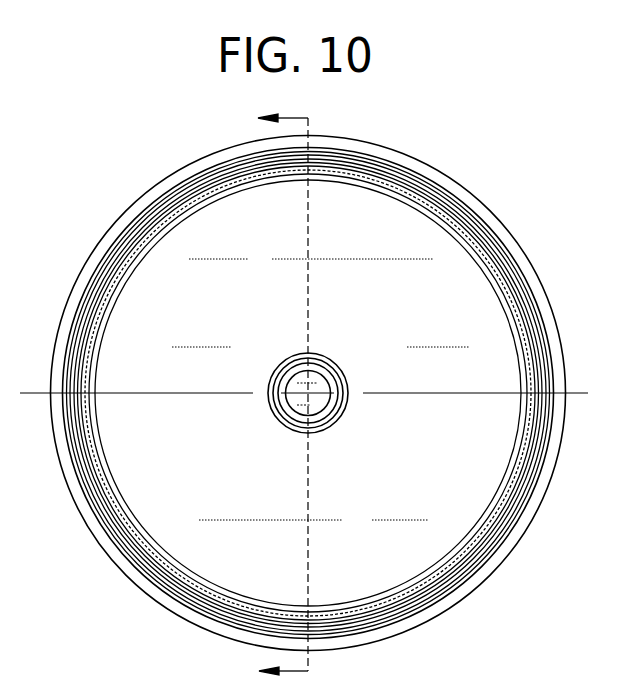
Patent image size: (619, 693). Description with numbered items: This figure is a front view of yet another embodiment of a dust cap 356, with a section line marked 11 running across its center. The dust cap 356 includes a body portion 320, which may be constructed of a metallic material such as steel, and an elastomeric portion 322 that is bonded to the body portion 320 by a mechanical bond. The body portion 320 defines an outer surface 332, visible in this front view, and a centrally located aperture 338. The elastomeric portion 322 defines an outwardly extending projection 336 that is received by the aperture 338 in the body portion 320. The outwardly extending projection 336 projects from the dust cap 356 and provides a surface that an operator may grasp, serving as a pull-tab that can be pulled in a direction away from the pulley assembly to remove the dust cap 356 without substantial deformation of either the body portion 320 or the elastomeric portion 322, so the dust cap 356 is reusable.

The body portion 320 is at (228, 474).
The elastomeric portion 322 is at (485, 222).
The outer surface 332 is at (373, 225).
The outwardly extending projection 336 is at (318, 402).
The centrally located aperture 338 is at (322, 367).
The dust cap 356 is at (382, 127).
The section line 11- 11 is at (268, 393).